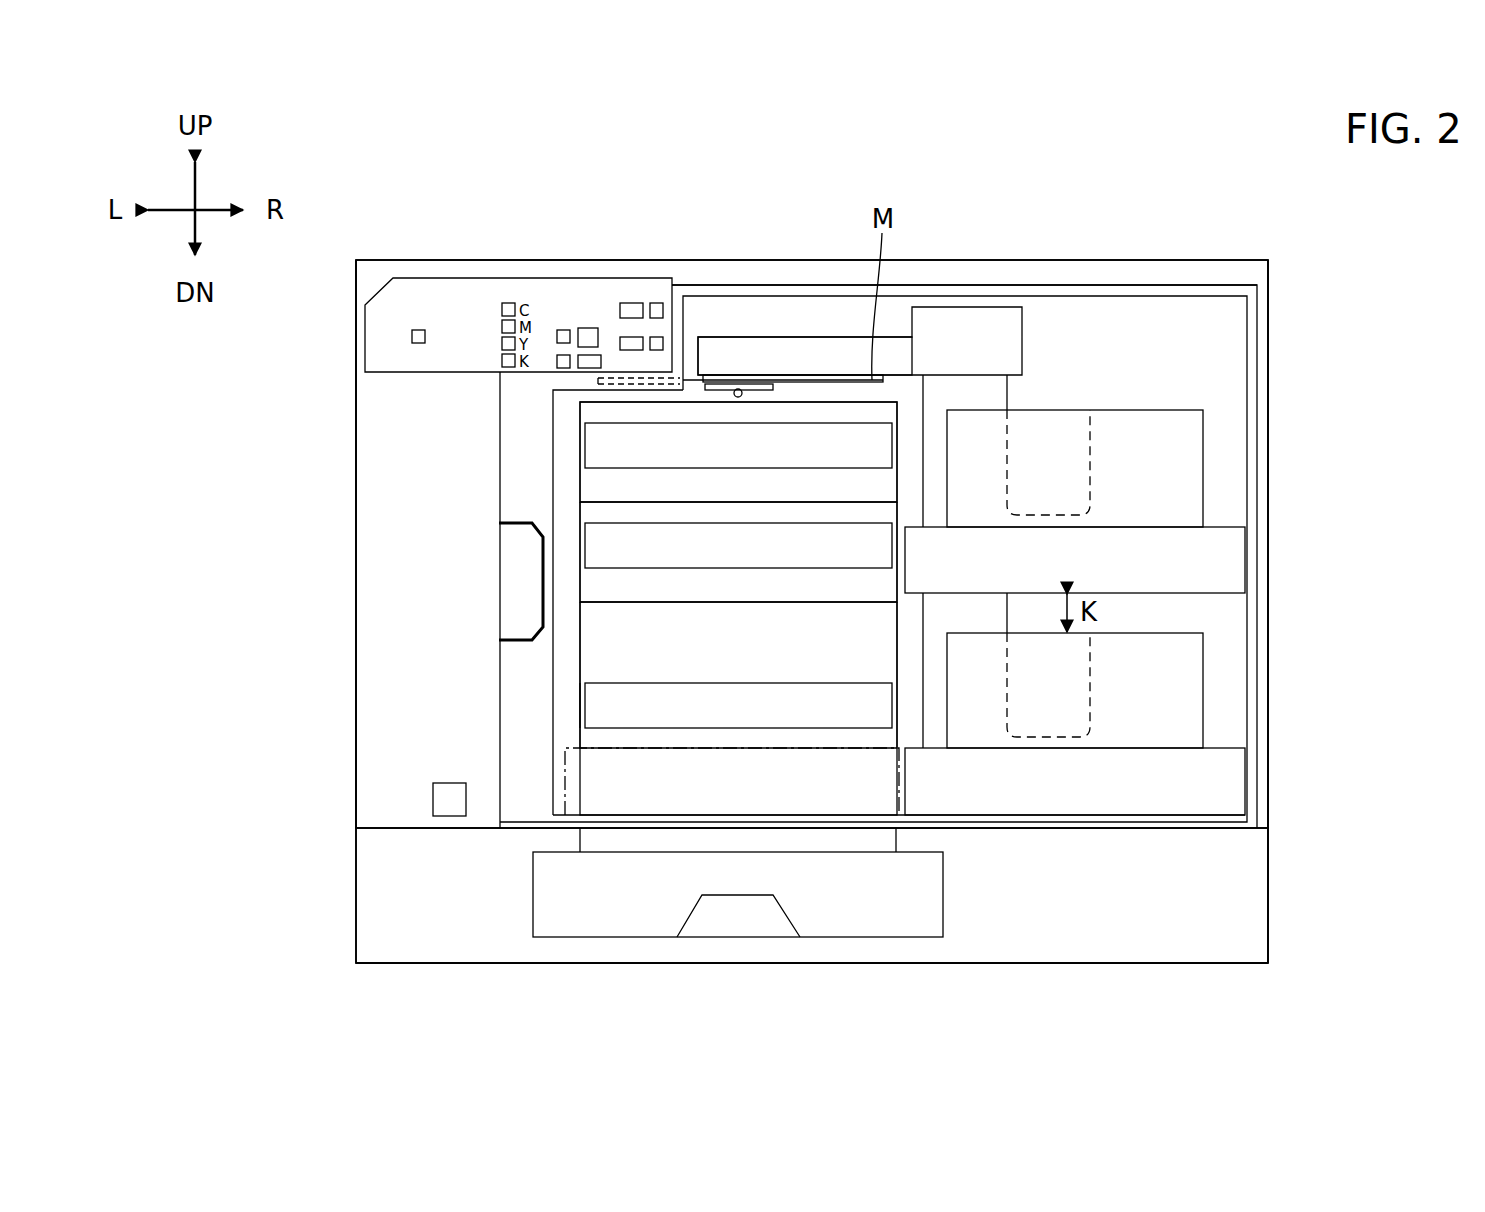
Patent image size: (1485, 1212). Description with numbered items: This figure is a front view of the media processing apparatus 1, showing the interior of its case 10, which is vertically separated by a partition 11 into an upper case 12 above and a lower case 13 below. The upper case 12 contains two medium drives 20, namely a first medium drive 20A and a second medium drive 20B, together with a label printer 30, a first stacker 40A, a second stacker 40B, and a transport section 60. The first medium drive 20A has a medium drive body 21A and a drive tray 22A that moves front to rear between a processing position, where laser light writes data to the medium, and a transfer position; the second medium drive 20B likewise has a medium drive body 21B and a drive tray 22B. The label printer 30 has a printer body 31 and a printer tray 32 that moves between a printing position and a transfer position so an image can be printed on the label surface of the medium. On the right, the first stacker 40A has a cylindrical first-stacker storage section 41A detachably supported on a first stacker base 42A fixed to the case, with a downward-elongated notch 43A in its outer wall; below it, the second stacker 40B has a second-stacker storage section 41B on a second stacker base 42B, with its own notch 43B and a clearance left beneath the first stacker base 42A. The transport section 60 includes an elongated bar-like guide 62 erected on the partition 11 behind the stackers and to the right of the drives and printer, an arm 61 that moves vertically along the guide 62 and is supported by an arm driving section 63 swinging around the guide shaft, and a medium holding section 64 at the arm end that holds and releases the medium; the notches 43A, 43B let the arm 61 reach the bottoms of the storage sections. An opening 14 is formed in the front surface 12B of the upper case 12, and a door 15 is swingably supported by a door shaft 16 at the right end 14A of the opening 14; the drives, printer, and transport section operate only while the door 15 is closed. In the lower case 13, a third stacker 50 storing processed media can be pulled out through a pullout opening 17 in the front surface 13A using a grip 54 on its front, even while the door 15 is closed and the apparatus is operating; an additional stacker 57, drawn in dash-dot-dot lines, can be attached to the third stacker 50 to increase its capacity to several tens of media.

The media processing apparatus 1 is at (858, 192).
The case 10 is at (831, 260).
The partition 11 is at (1270, 826).
The upper case 12 is at (355, 821).
The front surface 12B is at (382, 678).
The lower case 13 is at (355, 887).
The front surface 13A is at (415, 938).
The opening 14 is at (1188, 310).
The right end 14A is at (1247, 282).
The door 15 is at (562, 513).
The door shaft 16 is at (1250, 368).
The pullout opening 17 is at (944, 870).
The medium drives 20 is at (899, 602).
The first medium drive 20A is at (577, 404).
The second medium drive 20B is at (577, 527).
The medium drive body 21A is at (578, 473).
The medium drive body 21B is at (578, 596).
The drive tray 22A is at (595, 438).
The drive tray 22B is at (605, 548).
The label printer 30 is at (577, 640).
The printer body 31 is at (605, 661).
The printer tray 32 is at (593, 707).
The first stacker 40A is at (1206, 470).
The second stacker 40B is at (1206, 692).
The first-stacker storage section 41A is at (1193, 435).
The second-stacker storage section 41B is at (1193, 658).
The first stacker base 42A is at (1225, 562).
The second stacker base 42B is at (1225, 783).
The notch 43A is at (1090, 465).
The notch 43B is at (1090, 672).
The third stacker 50 is at (951, 903).
The grip 54 is at (789, 918).
The additional stacker 57 is at (565, 776).
The transport section 60 is at (957, 300).
The arm 61 is at (782, 350).
The guide 62 is at (1005, 400).
The arm driving section 63 is at (912, 381).
The medium holding section 64 is at (739, 396).